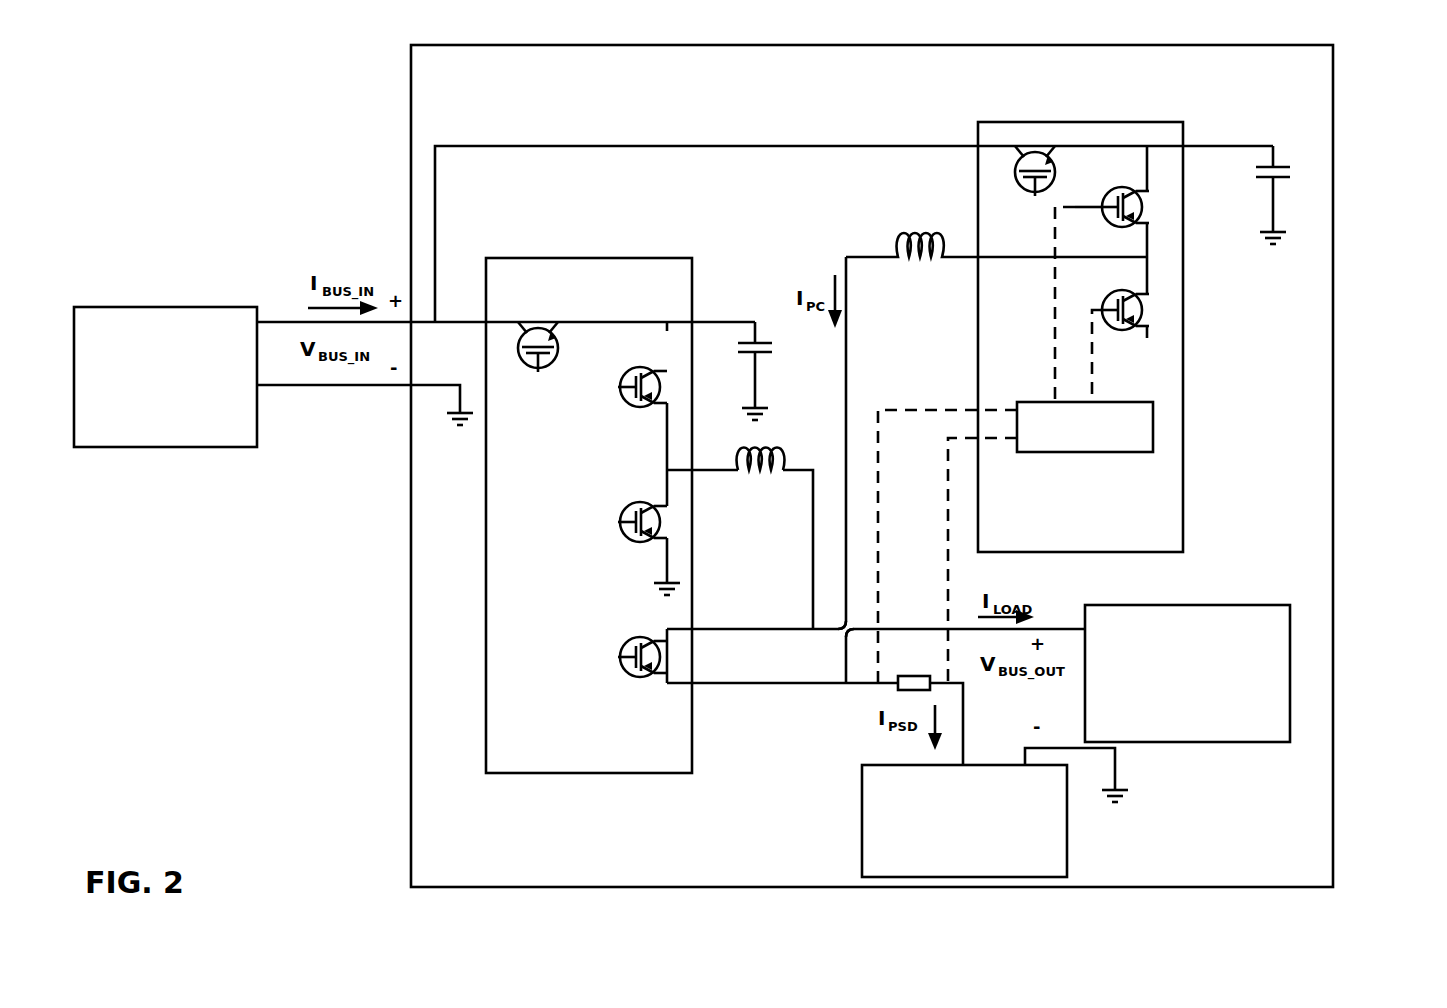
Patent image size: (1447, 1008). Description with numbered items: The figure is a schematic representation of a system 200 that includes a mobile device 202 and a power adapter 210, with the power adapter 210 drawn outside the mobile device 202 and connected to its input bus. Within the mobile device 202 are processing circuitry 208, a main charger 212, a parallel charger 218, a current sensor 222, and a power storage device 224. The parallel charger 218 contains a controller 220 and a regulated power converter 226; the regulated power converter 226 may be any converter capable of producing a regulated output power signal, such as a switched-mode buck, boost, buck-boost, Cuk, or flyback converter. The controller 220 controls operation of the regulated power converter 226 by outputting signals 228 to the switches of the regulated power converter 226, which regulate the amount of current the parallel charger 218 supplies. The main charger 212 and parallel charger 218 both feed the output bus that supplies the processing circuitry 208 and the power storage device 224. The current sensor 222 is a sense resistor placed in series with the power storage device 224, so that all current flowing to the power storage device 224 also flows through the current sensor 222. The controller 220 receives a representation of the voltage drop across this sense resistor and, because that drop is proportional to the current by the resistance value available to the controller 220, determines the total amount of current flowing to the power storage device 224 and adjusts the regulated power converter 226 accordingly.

The system 200 is at (1364, 72).
The mobile device 202 is at (872, 466).
The processing circuitry 208 is at (1157, 703).
The power adapter 210 is at (165, 377).
The main charger 212 is at (649, 515).
The parallel charger 218 is at (1014, 402).
The controller 220 is at (1085, 427).
The current sensor 222 is at (905, 692).
The power storage device 224 is at (964, 821).
The regulated power converter 226 is at (1170, 228).
The signals 228 is at (1055, 362).